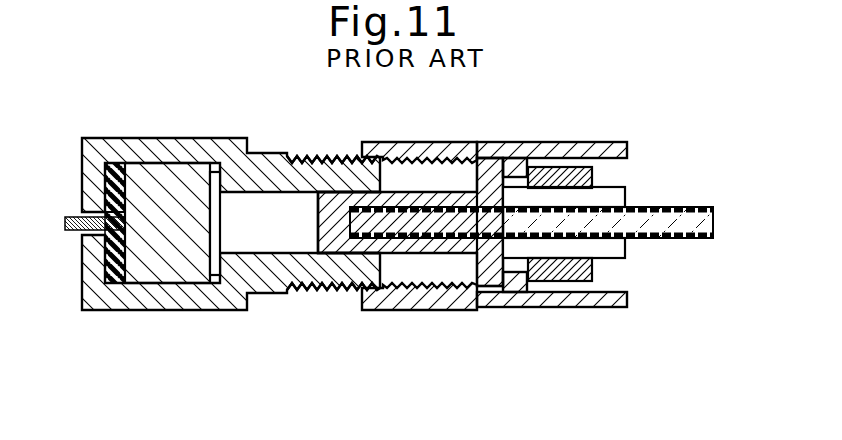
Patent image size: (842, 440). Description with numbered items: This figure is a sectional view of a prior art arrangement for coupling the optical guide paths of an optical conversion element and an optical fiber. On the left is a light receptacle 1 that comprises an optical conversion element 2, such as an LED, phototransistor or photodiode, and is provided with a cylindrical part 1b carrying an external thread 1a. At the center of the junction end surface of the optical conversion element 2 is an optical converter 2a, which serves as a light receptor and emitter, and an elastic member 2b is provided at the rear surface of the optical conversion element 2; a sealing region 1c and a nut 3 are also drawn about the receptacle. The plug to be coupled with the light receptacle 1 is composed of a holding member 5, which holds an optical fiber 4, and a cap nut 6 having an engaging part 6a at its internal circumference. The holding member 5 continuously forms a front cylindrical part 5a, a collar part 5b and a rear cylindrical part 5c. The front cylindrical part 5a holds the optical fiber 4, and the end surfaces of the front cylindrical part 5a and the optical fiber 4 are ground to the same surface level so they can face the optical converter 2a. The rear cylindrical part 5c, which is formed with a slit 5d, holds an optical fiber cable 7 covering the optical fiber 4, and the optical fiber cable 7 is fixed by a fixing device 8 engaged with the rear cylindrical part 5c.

The light receptacle 1 is at (172, 134).
The external thread 1a is at (309, 153).
The cylindrical part 1b is at (312, 270).
The seal 1c is at (102, 197).
The optical conversion element 2 is at (170, 272).
The optical converter 2a is at (214, 227).
The elastic member 2b is at (100, 252).
The nut 3 is at (483, 134).
The optical fiber 4 is at (708, 225).
The holding member 5 is at (453, 266).
The front cylindrical part 5a is at (365, 248).
The collar part 5b is at (493, 282).
The rear cylindrical part 5c is at (618, 258).
The slit 5d is at (623, 188).
The cap nut 6 is at (587, 147).
The engaging part 6a is at (513, 168).
The optical fiber cable 7 is at (683, 207).
The fixing device 8 is at (570, 274).